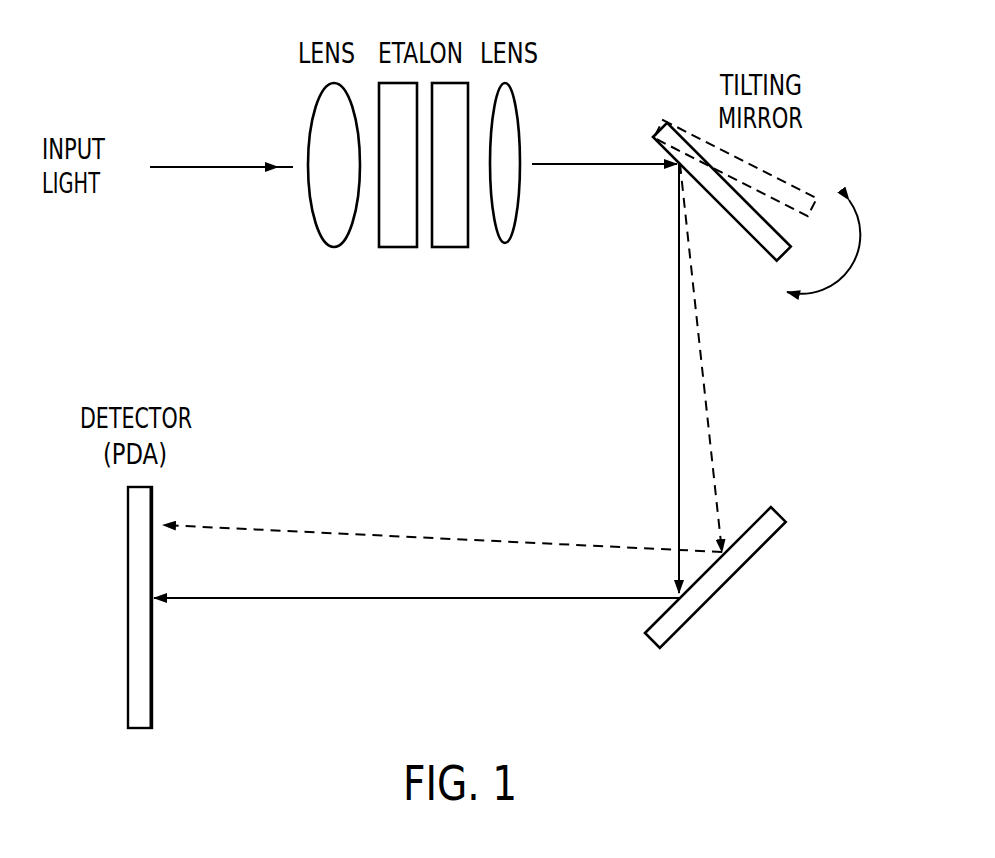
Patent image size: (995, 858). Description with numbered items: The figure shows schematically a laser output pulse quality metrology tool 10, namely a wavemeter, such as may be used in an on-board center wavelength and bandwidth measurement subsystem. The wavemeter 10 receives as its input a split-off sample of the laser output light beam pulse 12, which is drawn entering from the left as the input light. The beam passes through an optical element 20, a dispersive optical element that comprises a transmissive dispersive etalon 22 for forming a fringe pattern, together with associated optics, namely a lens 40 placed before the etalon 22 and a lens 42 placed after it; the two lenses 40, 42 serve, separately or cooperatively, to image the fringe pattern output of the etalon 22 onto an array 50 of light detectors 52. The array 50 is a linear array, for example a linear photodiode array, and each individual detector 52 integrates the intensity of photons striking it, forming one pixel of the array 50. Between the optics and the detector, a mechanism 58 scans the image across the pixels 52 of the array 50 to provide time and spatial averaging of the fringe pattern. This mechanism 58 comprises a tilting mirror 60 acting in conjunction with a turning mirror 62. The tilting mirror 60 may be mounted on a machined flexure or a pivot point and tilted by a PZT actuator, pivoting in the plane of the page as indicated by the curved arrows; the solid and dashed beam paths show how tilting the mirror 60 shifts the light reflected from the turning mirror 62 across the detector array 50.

The laser output pulse quality metrology tool 10 is at (168, 306).
The laser output light beam pulse sample 12 is at (183, 167).
The optical element 20 is at (431, 229).
The transmissive dispersive etalon 22 is at (455, 232).
The lens 40 is at (328, 222).
The lens 42 is at (510, 212).
The array of light detectors 50 is at (224, 605).
The light detectors 52 is at (142, 685).
The mechanism 58 is at (756, 262).
The tilting mirror 60 is at (772, 247).
The turning mirror 62 is at (773, 522).